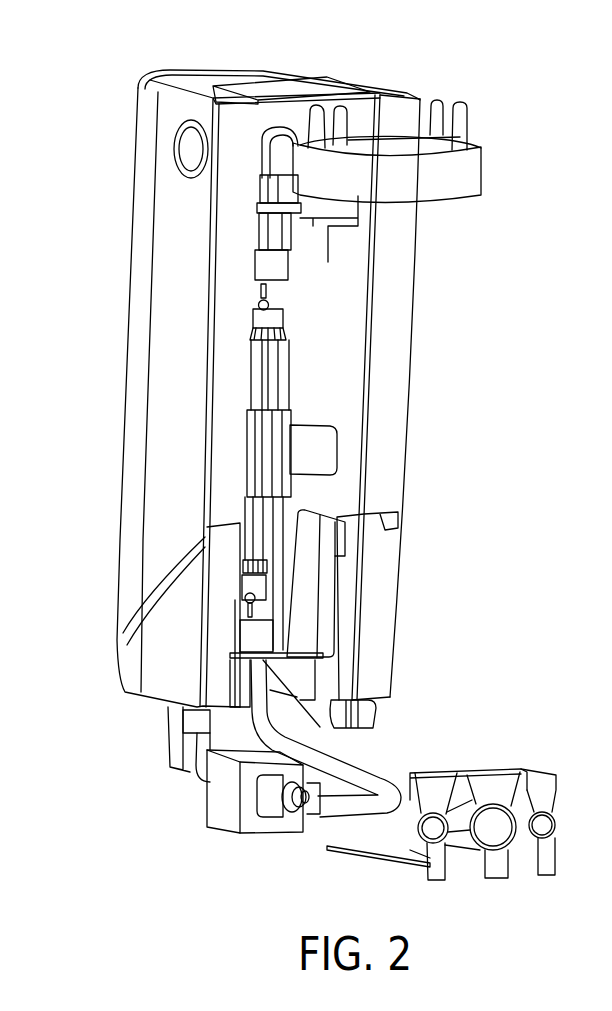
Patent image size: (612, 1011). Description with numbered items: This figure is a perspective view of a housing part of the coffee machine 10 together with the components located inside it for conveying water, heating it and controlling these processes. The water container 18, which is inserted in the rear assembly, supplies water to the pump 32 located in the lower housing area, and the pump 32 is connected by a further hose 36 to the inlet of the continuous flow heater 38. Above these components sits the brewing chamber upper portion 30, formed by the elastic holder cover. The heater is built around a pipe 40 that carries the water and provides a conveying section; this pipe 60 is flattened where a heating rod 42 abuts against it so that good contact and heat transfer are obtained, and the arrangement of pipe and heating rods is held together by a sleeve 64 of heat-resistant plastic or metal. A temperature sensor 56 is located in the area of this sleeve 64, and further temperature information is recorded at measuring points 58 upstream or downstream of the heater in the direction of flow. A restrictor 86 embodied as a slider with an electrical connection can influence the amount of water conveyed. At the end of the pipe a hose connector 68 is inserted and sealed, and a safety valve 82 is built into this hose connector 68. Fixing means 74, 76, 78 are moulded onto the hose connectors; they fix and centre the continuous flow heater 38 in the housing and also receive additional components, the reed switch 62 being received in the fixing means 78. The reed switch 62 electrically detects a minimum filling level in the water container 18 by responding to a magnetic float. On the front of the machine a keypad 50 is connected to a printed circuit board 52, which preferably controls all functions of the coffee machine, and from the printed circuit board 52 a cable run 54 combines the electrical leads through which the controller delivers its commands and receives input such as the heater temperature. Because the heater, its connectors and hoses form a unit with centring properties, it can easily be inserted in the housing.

The coffee machine 10 is at (48, 66).
The water container 18 is at (148, 126).
The brewing chamber upper portion 30 is at (470, 181).
The measuring points 58 is at (273, 193).
The hose connector 68 is at (258, 216).
The safety valve 82 is at (307, 232).
The heating rod 42 is at (272, 358).
The continuous flow heater 38 is at (278, 393).
The temperature sensor 56 is at (322, 443).
The sleeve 64 is at (290, 485).
The reed switch 62 is at (343, 528).
The fixing means 78 is at (337, 617).
The pipe 60 is at (263, 677).
The fixing means 76 is at (373, 720).
The further hose 36 is at (367, 777).
The pipe 40 is at (240, 627).
The restrictor 86 is at (245, 570).
The fixing means 74 is at (183, 723).
The pump 32 is at (220, 817).
The cable run 54 is at (343, 827).
The printed circuit board 52 is at (393, 860).
The keypad 50 is at (503, 822).